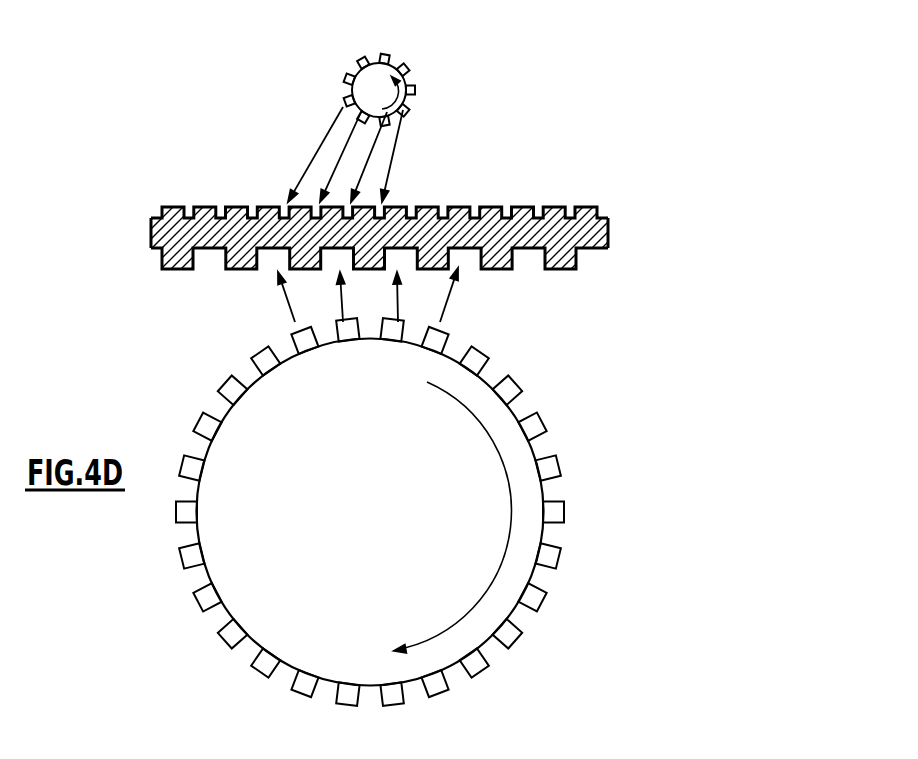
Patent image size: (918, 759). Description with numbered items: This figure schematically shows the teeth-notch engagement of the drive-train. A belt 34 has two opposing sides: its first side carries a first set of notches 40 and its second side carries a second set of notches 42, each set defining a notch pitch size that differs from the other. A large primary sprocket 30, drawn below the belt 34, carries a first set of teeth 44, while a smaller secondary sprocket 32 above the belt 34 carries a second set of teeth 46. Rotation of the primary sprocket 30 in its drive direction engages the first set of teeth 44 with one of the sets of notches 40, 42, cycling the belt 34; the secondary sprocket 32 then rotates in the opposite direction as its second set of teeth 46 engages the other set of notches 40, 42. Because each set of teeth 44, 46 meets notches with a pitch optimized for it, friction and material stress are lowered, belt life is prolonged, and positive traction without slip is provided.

The primary sprocket 30 is at (389, 512).
The secondary sprocket 32 is at (411, 66).
The belt 34 is at (384, 233).
The first set of notches 40 is at (411, 206).
The second set of notches 42 is at (523, 268).
The first set of teeth 44 is at (513, 383).
The second set of teeth 46 is at (418, 90).